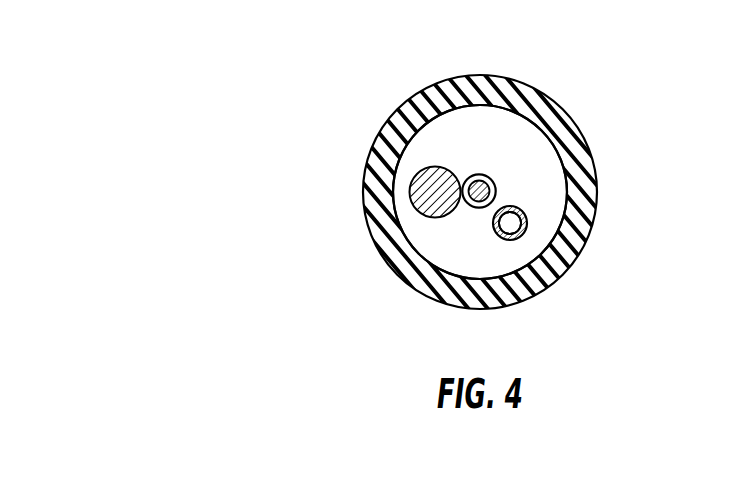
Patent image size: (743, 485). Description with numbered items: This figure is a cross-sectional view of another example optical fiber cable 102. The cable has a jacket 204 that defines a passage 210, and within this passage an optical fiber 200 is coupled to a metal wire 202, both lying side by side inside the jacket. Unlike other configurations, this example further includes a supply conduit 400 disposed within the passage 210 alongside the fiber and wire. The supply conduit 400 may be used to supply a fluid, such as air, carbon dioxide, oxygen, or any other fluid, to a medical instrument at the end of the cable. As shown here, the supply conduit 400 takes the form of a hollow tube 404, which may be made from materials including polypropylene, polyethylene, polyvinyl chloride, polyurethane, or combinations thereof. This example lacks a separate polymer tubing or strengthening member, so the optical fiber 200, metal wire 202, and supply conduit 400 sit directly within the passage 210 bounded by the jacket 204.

The optical fiber cable 102 is at (370, 73).
The jacket 204 is at (597, 193).
The passage 210 is at (487, 122).
The metal wire 202 is at (410, 191).
The optical fiber 200 is at (478, 176).
The supply conduit 400 is at (523, 245).
The hollow tube 404 is at (494, 221).